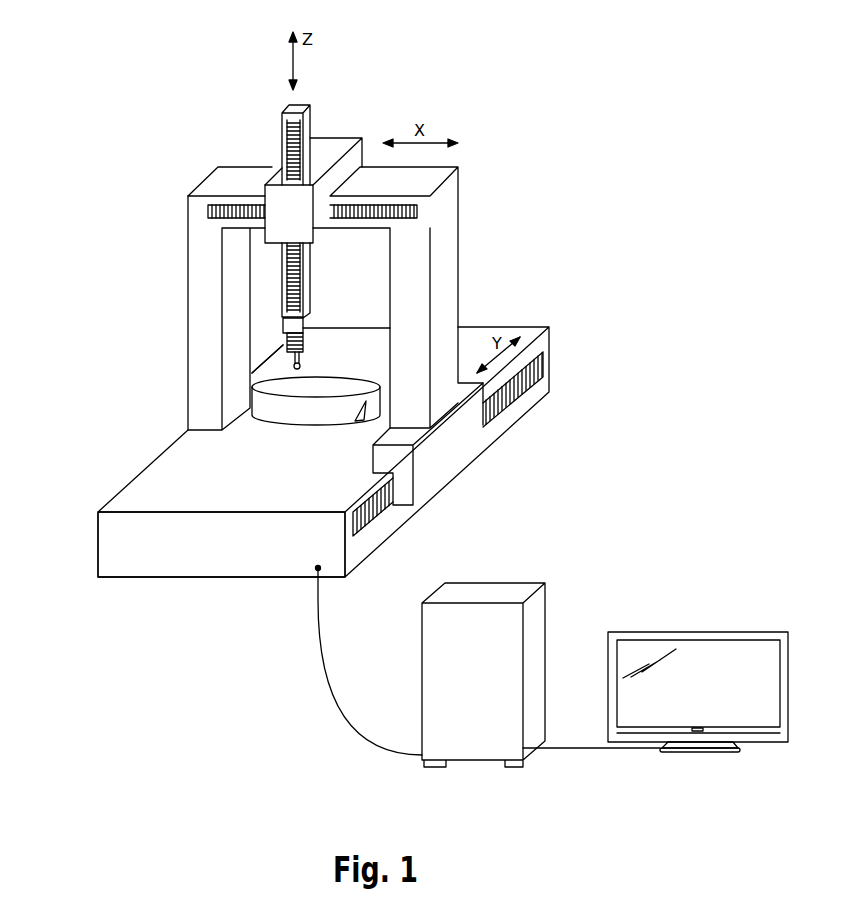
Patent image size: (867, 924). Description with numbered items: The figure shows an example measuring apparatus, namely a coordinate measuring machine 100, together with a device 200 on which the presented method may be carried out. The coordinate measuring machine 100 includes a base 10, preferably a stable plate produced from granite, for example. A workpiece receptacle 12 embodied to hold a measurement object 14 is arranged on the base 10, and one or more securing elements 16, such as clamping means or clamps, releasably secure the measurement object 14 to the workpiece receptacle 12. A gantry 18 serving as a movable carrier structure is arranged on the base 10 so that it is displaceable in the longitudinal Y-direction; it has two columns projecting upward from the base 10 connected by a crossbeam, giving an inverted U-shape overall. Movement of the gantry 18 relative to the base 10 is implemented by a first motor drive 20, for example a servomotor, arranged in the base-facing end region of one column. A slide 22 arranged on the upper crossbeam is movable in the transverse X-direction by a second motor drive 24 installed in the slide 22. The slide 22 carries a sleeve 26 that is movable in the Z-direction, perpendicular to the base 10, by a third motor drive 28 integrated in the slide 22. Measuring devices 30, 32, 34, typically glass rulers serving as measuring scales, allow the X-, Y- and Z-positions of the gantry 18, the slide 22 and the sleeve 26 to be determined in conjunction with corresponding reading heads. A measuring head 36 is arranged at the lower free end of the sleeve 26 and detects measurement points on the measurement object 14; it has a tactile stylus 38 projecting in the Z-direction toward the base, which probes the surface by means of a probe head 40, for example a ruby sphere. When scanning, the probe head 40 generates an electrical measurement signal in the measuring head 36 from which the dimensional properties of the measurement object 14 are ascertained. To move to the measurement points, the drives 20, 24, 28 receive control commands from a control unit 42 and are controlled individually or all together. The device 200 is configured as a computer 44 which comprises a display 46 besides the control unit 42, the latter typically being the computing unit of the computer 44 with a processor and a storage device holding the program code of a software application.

The coordinate measuring machine 100 is at (482, 145).
The base 10 is at (143, 497).
The workpiece receptacle 12 is at (257, 427).
The measurement object 14 is at (314, 418).
The securing element 16 is at (357, 425).
The gantry 18 is at (205, 272).
The first motor drive 20 is at (452, 452).
The slide 22 is at (268, 178).
The second motor drive 24 is at (285, 203).
The sleeve 26 is at (290, 103).
The third motor drive 28 is at (345, 142).
The measuring device 30 is at (417, 210).
The measuring device 32 is at (517, 390).
The measuring device 34 is at (304, 137).
The measuring head 36 is at (303, 333).
The tactile stylus 38 is at (283, 343).
The probe head 40 is at (300, 358).
The control unit 42 is at (481, 594).
The computer 44 is at (742, 632).
The display 46 is at (687, 667).
The device 200 is at (686, 768).